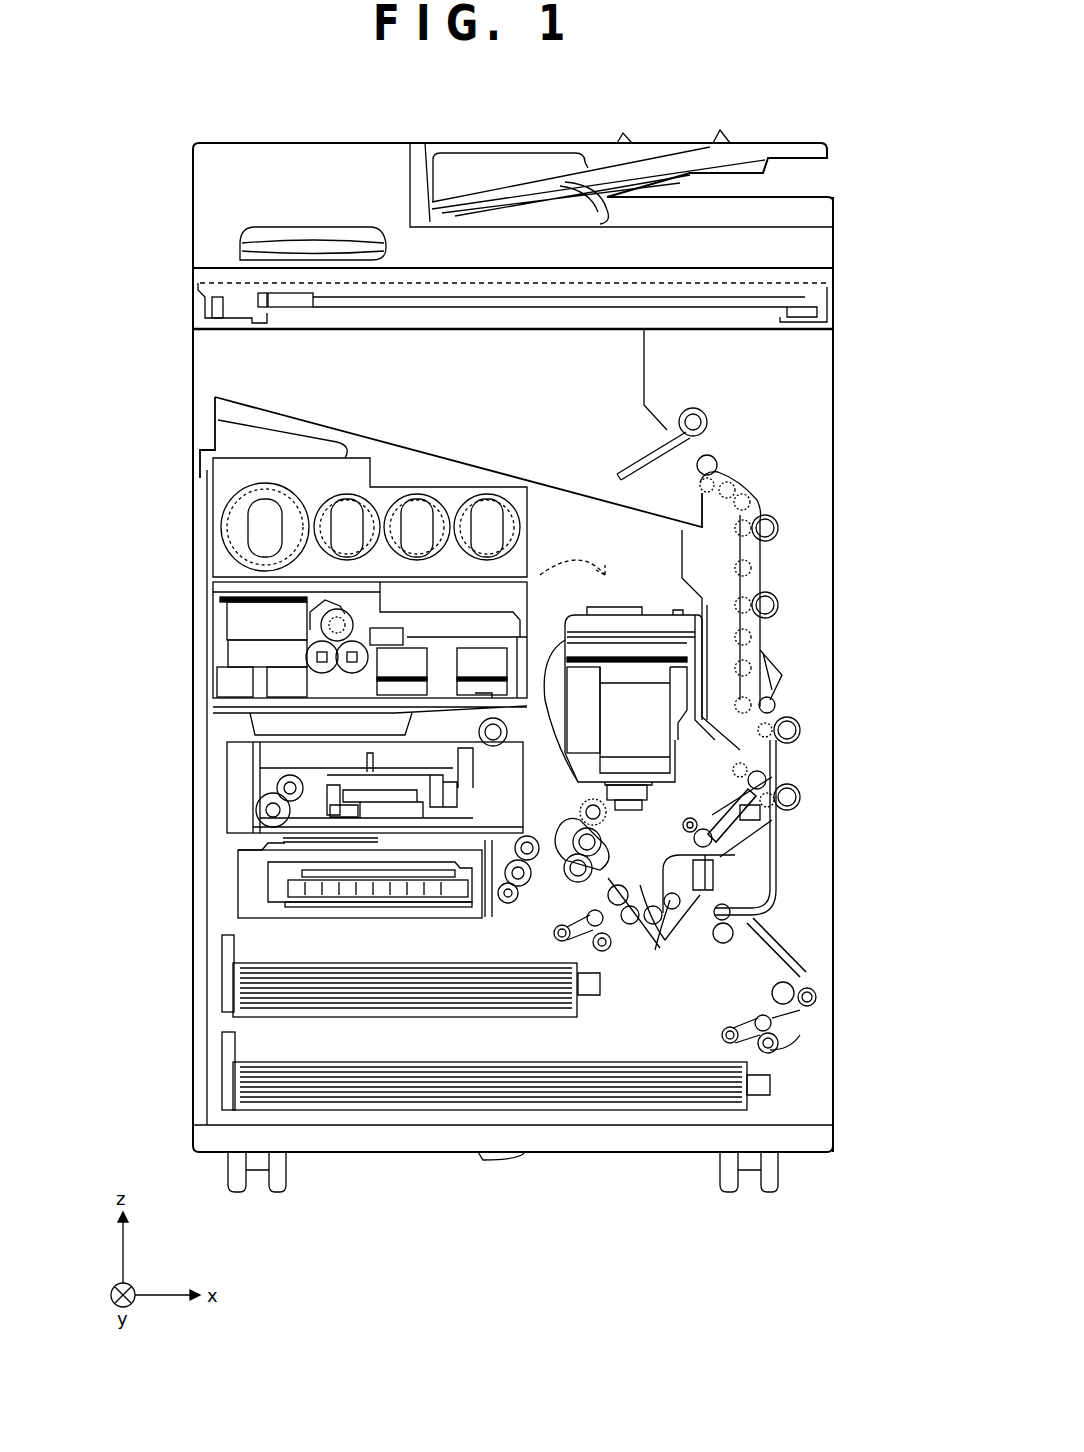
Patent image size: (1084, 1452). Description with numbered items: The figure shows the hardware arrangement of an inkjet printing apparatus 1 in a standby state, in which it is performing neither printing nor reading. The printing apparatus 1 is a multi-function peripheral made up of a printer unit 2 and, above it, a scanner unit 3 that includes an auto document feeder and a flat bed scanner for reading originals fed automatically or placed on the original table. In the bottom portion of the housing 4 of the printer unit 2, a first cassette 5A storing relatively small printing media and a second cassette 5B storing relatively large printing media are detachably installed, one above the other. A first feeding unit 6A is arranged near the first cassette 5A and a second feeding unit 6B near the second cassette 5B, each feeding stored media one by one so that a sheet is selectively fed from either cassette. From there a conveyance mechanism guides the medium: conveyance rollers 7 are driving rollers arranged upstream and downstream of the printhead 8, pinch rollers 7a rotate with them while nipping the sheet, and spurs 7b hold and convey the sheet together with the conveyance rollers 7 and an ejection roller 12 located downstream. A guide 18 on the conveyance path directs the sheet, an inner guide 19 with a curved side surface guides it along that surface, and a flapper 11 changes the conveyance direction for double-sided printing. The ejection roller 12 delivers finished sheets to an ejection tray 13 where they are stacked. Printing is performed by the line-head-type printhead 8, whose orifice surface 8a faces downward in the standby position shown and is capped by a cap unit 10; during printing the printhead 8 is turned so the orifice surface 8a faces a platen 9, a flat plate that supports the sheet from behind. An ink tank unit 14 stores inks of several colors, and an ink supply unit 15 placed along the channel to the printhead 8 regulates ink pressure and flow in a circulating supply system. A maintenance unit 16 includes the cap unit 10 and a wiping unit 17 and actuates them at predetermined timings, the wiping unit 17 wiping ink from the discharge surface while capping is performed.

The printing apparatus 1 is at (775, 95).
The printer unit 2 is at (118, 1140).
The scanner unit 3 is at (193, 329).
The housing 4 is at (833, 410).
The first cassette 5A is at (222, 977).
The second cassette 5B is at (222, 1080).
The first feeding unit 6A is at (612, 945).
The second feeding unit 6B is at (785, 1035).
The conveyance rollers 7 is at (778, 527).
The pinch rollers 7a is at (812, 995).
The spurs 7b is at (755, 490).
The printhead 8 is at (645, 731).
The orifice surface 8a is at (765, 818).
The platen 9 is at (762, 848).
The cap unit 10 is at (770, 878).
The flapper 11 is at (780, 672).
The ejection roller 12 is at (712, 470).
The ejection tray 13 is at (465, 465).
The ink tank unit 14 is at (215, 485).
The ink supply unit 15 is at (215, 650).
The maintenance unit 16 is at (238, 872).
The wiping unit 17 is at (232, 755).
The guide 18 is at (762, 558).
The inner guide 19 is at (765, 925).